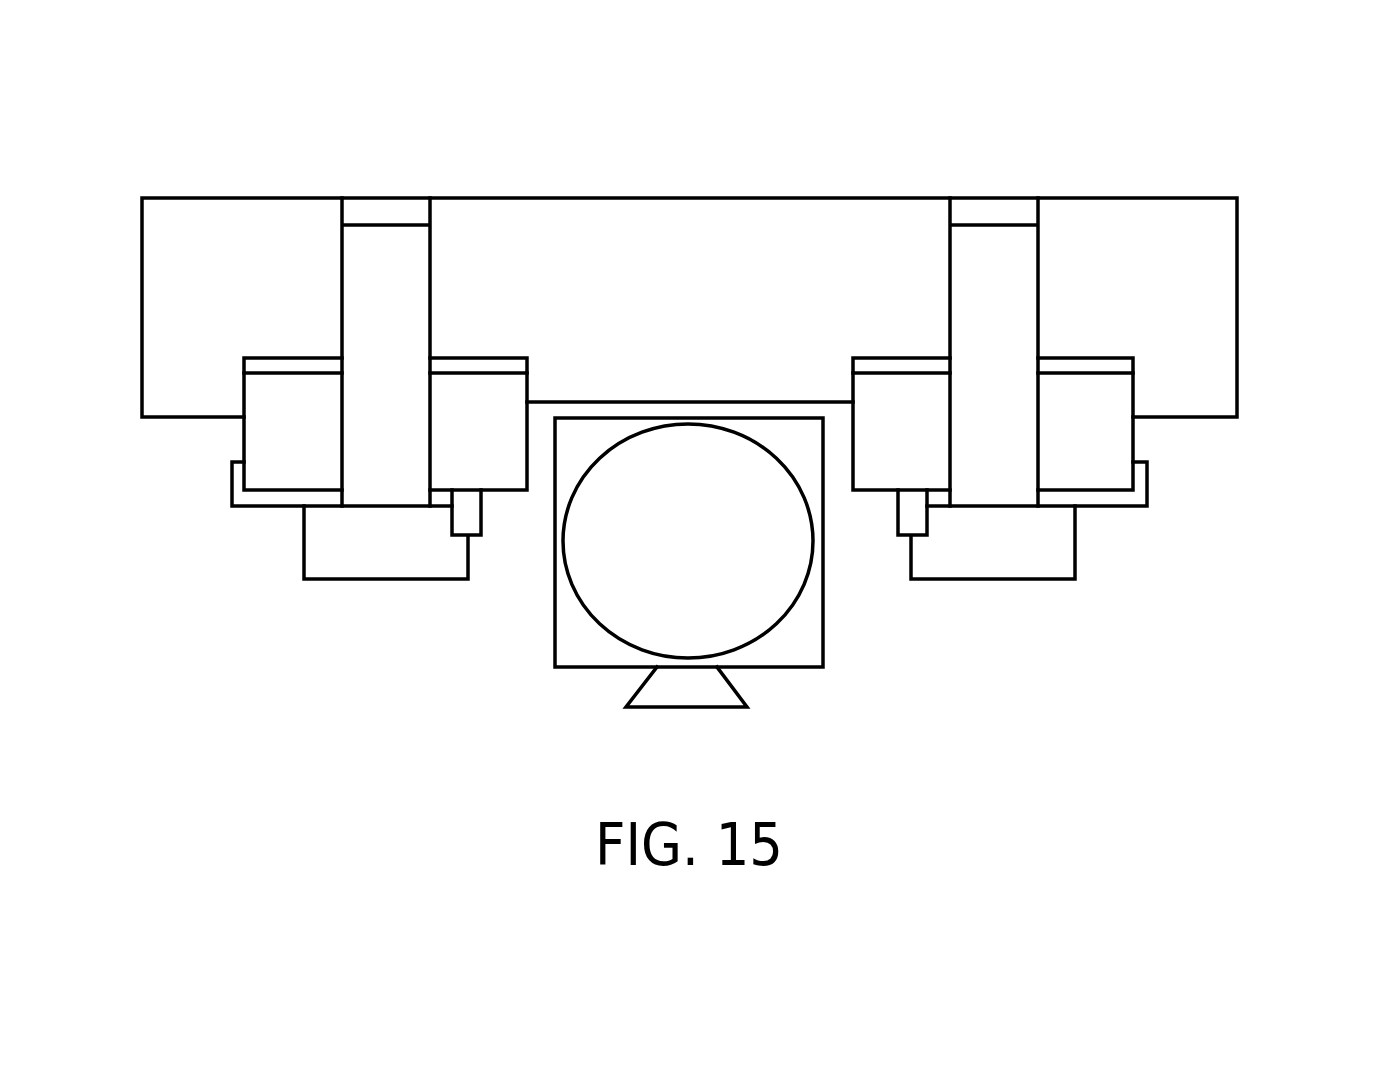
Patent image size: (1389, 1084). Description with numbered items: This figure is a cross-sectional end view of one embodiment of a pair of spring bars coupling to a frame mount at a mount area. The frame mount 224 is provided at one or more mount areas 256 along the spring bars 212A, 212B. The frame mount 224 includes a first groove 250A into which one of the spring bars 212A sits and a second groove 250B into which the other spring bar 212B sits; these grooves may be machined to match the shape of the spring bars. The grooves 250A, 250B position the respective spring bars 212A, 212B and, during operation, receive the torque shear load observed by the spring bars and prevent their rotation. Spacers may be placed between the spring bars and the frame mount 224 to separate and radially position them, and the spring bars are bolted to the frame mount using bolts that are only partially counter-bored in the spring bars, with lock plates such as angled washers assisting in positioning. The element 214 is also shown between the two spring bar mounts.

The mount area 256 is at (709, 445).
The frame mount 224 is at (1205, 286).
The first groove 250A is at (244, 391).
The second groove 250B is at (1133, 388).
The spring bar 212A is at (268, 431).
The spring bar 212B is at (1110, 432).
The wheel housing 214 is at (773, 628).